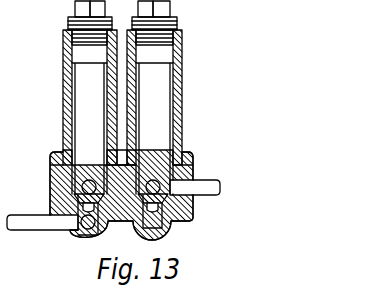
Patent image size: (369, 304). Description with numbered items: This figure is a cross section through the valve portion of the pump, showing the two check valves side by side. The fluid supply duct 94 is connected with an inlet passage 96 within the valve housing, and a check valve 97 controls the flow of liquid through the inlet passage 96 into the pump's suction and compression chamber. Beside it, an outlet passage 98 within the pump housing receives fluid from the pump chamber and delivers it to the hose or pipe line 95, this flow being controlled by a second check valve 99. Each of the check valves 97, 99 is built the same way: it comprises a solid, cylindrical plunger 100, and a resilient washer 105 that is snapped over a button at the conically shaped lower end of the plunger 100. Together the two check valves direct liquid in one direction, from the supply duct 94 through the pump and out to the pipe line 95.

The fluid supply duct 94 is at (24, 230).
The hose or pipe line 95 is at (215, 180).
The inlet passage 96 is at (74, 235).
The check valve 97 is at (72, 116).
The outlet passage 98 is at (161, 223).
The check valve 99 is at (170, 114).
The solid cylindrical plunger 100 is at (72, 84).
The resilient washer 105 is at (50, 195).